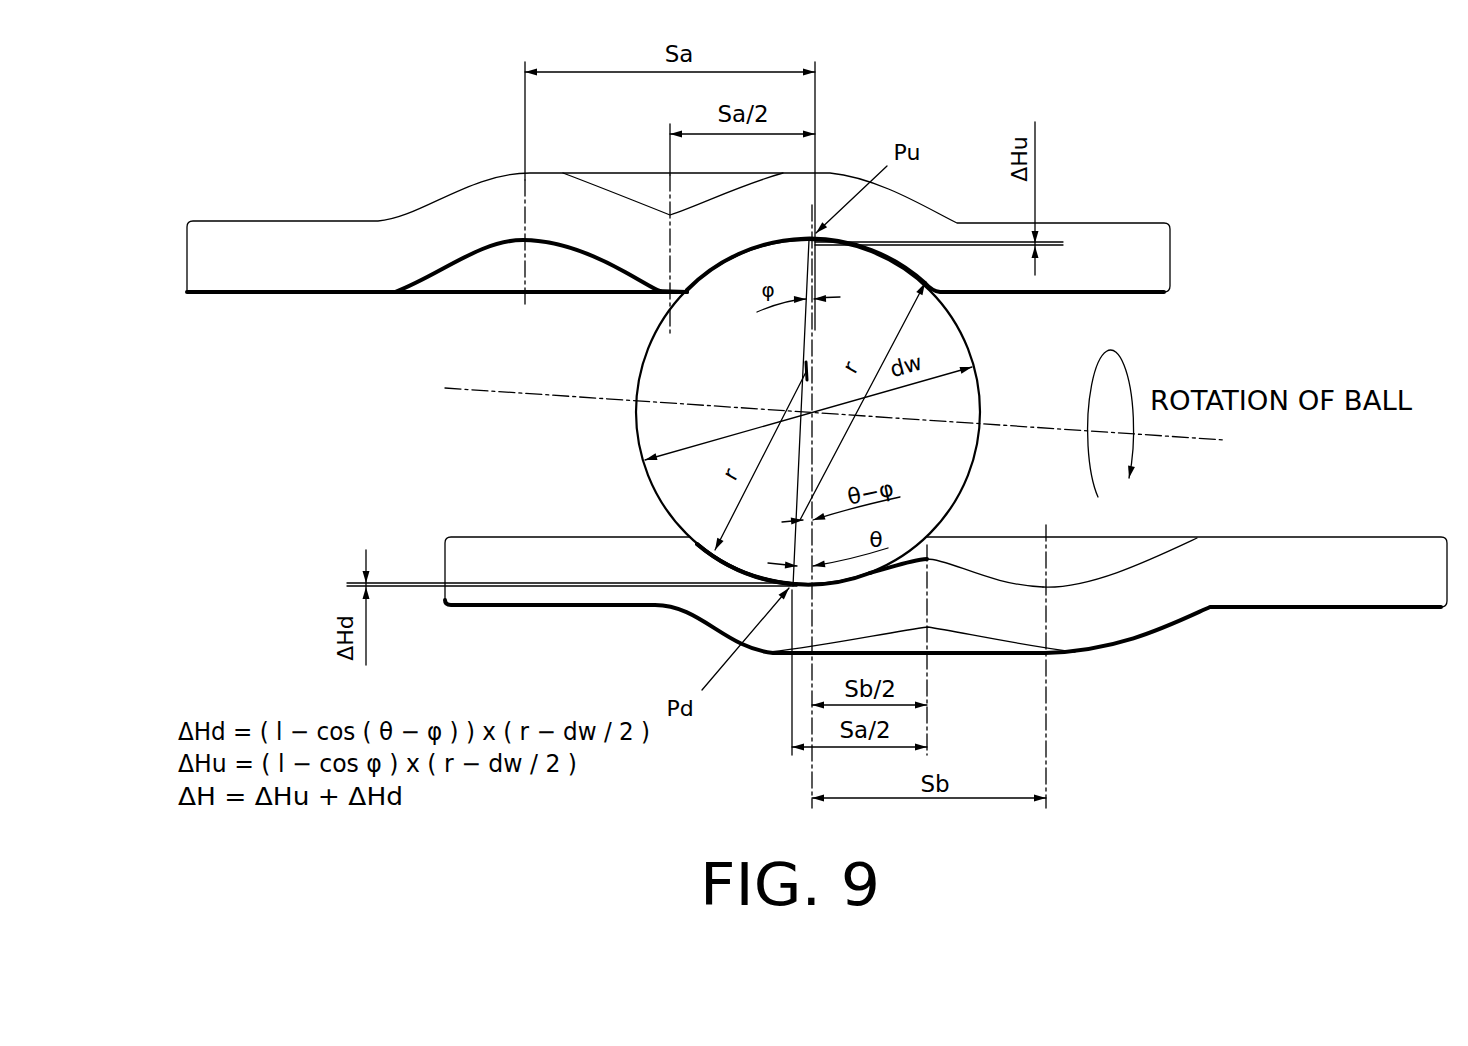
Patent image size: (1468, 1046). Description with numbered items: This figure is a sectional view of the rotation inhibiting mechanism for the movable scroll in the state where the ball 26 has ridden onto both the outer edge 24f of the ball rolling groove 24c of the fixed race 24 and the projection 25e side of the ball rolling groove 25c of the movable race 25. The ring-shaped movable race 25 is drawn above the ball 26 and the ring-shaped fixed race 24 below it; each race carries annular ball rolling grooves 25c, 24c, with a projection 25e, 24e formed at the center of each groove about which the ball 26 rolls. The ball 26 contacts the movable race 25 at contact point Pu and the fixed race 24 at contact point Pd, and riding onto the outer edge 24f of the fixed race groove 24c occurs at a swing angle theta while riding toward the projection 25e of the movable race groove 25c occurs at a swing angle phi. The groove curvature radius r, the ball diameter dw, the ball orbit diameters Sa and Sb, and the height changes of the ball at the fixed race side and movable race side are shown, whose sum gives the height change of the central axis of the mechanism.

The fixed race 24 is at (1368, 587).
The ball rolling groove 24c is at (1080, 582).
The projection 24e is at (932, 543).
The outer edge 24f is at (692, 548).
The movable race 25 is at (1108, 240).
The ball rolling groove 25c is at (497, 250).
The projection 25e is at (660, 292).
The ball 26 is at (967, 340).